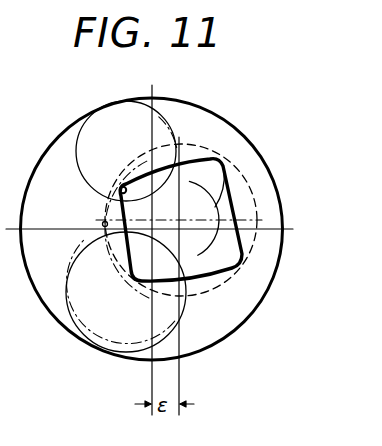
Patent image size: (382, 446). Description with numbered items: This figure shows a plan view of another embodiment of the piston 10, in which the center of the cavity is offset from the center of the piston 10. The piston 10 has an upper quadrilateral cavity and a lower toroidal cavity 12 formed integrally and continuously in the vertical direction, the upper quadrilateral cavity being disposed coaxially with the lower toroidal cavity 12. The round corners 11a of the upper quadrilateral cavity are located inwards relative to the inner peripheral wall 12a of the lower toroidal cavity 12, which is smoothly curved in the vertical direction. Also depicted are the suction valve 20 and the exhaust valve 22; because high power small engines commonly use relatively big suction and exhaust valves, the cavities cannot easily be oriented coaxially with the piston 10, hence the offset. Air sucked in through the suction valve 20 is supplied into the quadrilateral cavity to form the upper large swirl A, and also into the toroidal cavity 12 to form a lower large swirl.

The piston 10 is at (257, 160).
The lower toroidal cavity 12 is at (245, 189).
The inner peripheral wall 12a is at (103, 229).
The round corners 11a is at (120, 191).
The suction valve 20 is at (65, 298).
The exhaust valve 22 is at (75, 149).
The upper large swirl A is at (224, 170).